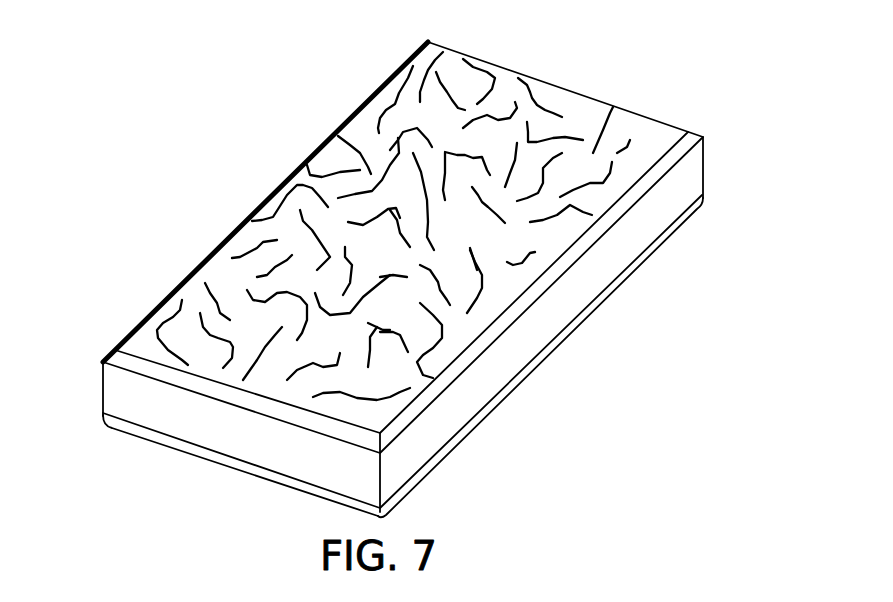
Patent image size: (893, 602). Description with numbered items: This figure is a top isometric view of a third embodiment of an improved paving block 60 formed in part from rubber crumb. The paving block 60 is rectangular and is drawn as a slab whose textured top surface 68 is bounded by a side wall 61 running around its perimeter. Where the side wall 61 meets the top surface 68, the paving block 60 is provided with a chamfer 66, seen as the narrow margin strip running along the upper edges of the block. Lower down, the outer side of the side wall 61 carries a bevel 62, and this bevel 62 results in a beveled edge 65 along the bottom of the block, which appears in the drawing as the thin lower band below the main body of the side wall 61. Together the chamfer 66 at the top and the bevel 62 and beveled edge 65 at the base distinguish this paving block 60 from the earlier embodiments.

The paving block 60 is at (139, 195).
The side wall 61 is at (665, 227).
The bevel 62 is at (238, 472).
The beveled edge 65 is at (497, 403).
The chamfer 66 is at (550, 287).
The top surface 68 is at (580, 112).